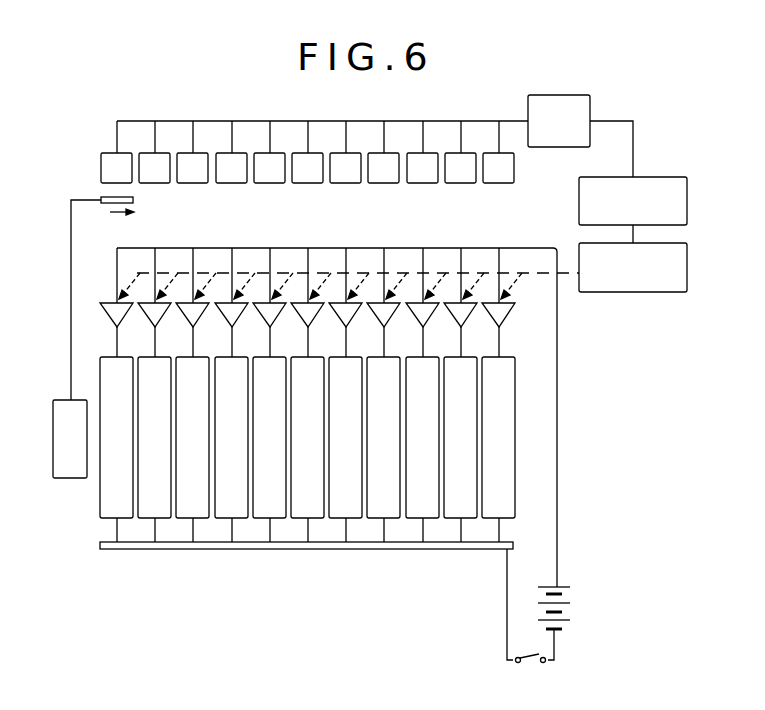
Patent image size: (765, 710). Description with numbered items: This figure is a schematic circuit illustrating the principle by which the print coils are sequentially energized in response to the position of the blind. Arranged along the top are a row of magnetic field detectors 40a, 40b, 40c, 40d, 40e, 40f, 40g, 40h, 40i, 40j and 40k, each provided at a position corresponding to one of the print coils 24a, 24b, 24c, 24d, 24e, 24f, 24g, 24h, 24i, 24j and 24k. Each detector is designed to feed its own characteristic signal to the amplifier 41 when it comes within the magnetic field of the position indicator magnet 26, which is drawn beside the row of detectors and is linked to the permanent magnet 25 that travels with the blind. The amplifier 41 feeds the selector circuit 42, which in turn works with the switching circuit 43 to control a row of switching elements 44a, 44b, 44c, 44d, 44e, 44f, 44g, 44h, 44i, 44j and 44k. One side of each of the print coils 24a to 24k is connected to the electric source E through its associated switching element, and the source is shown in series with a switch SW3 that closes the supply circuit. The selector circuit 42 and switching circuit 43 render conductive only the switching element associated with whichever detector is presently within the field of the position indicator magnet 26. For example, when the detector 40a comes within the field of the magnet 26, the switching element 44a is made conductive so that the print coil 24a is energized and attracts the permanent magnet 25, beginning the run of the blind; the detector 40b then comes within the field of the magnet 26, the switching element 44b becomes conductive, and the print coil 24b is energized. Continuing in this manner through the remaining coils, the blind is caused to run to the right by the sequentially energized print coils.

The magnetic field detector 40a is at (112, 164).
The magnetic field detector 40b is at (158, 183).
The magnetic field detector 40c is at (196, 183).
The magnetic field detector 40d is at (235, 183).
The magnetic field detector 40e is at (273, 183).
The magnetic field detector 40f is at (320, 183).
The magnetic field detector 40g is at (349, 183).
The magnetic field detector 40h is at (387, 183).
The magnetic field detector 40i is at (432, 183).
The magnetic field detector 40j is at (464, 183).
The magnetic field detector 40k is at (502, 183).
The amplifier 41 is at (571, 133).
The selector circuit 42 is at (645, 211).
The switching circuit 43 is at (645, 278).
The position indicator magnet 26 is at (107, 204).
The permanent magnet 25 is at (70, 478).
The switching element 44a is at (126, 312).
The switching element 44b is at (164, 312).
The switching element 44c is at (202, 312).
The switching element 44d is at (241, 312).
The switching element 44e is at (279, 312).
The switching element 44f is at (317, 312).
The switching element 44g is at (355, 312).
The switching element 44h is at (393, 312).
The switching element 44i is at (432, 312).
The switching element 44j is at (470, 312).
The switching element 44k is at (508, 312).
The print coil 24a is at (101, 519).
The print coil 24b is at (150, 519).
The print coil 24c is at (187, 519).
The print coil 24d is at (222, 519).
The print coil 24e is at (267, 519).
The print coil 24f is at (305, 519).
The print coil 24g is at (345, 519).
The print coil 24h is at (387, 519).
The print coil 24i is at (423, 519).
The print coil 24j is at (460, 519).
The print coil 24k is at (507, 519).
The electric source E is at (575, 610).
The switch SW3 is at (529, 666).